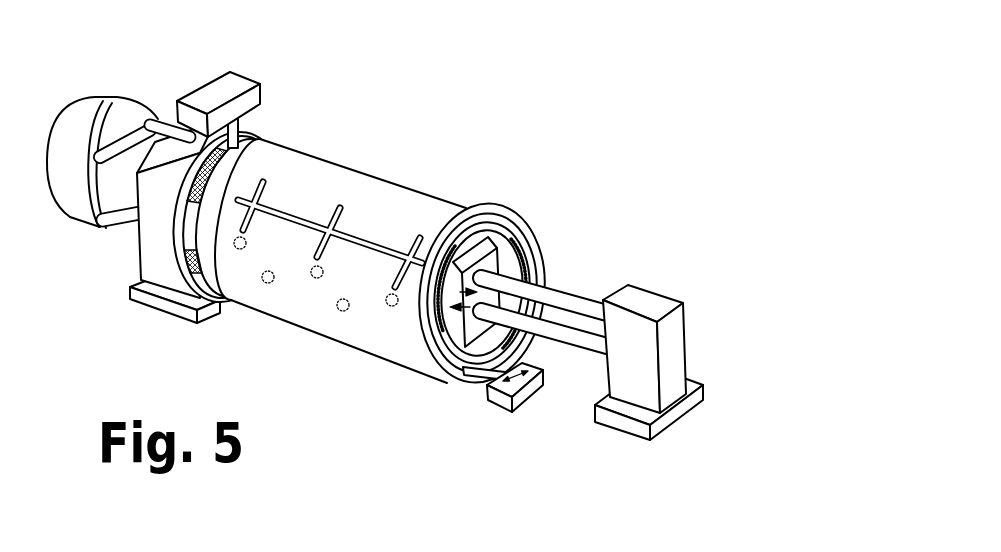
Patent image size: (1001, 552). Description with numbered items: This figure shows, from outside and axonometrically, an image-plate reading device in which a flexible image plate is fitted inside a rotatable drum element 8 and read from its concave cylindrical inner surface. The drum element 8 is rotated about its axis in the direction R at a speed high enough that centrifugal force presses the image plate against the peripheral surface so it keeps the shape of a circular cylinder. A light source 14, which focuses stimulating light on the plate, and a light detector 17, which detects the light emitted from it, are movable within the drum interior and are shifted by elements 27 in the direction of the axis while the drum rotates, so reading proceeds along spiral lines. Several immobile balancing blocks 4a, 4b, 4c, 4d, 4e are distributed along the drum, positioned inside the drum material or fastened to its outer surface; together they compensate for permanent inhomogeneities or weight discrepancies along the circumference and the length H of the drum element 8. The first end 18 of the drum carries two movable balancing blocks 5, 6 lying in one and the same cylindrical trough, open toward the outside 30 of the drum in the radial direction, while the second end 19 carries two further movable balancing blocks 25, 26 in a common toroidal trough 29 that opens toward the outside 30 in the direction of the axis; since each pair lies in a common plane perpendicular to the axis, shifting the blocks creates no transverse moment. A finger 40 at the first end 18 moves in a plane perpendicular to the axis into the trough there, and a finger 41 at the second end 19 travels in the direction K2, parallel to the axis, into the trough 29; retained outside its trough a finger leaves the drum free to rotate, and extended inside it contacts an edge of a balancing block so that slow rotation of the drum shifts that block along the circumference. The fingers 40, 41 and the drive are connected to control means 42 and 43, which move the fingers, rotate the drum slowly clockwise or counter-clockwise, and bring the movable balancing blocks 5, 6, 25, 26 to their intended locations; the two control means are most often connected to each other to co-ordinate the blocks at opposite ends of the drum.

The immobile balancing block 4a is at (240, 249).
The immobile balancing block 4b is at (317, 278).
The immobile balancing block 4c is at (392, 306).
The immobile balancing block 4d is at (268, 283).
The immobile balancing block 4e is at (343, 311).
The movable balancing block 5 is at (228, 163).
The movable balancing block 6 is at (188, 260).
The drum element 8 is at (385, 190).
The light source 14 is at (498, 267).
The light detector 17 is at (544, 328).
The first end of the drum element 18 is at (284, 118).
The second end of the drum element 19 is at (515, 200).
The movable balancing block 25 is at (434, 270).
The movable balancing block 26 is at (538, 348).
The shifting elements 27 is at (607, 292).
The toroidal trough 29 is at (462, 372).
The outside of the drum element 30 is at (459, 446).
The finger 40 is at (255, 113).
The finger 41 is at (492, 378).
The control means 42 is at (198, 97).
The control means 43 is at (499, 403).
The lengthwise direction of the drum element H is at (528, 205).
The rotation of the drum element R is at (460, 223).
The direction of finger travel K2 is at (552, 364).